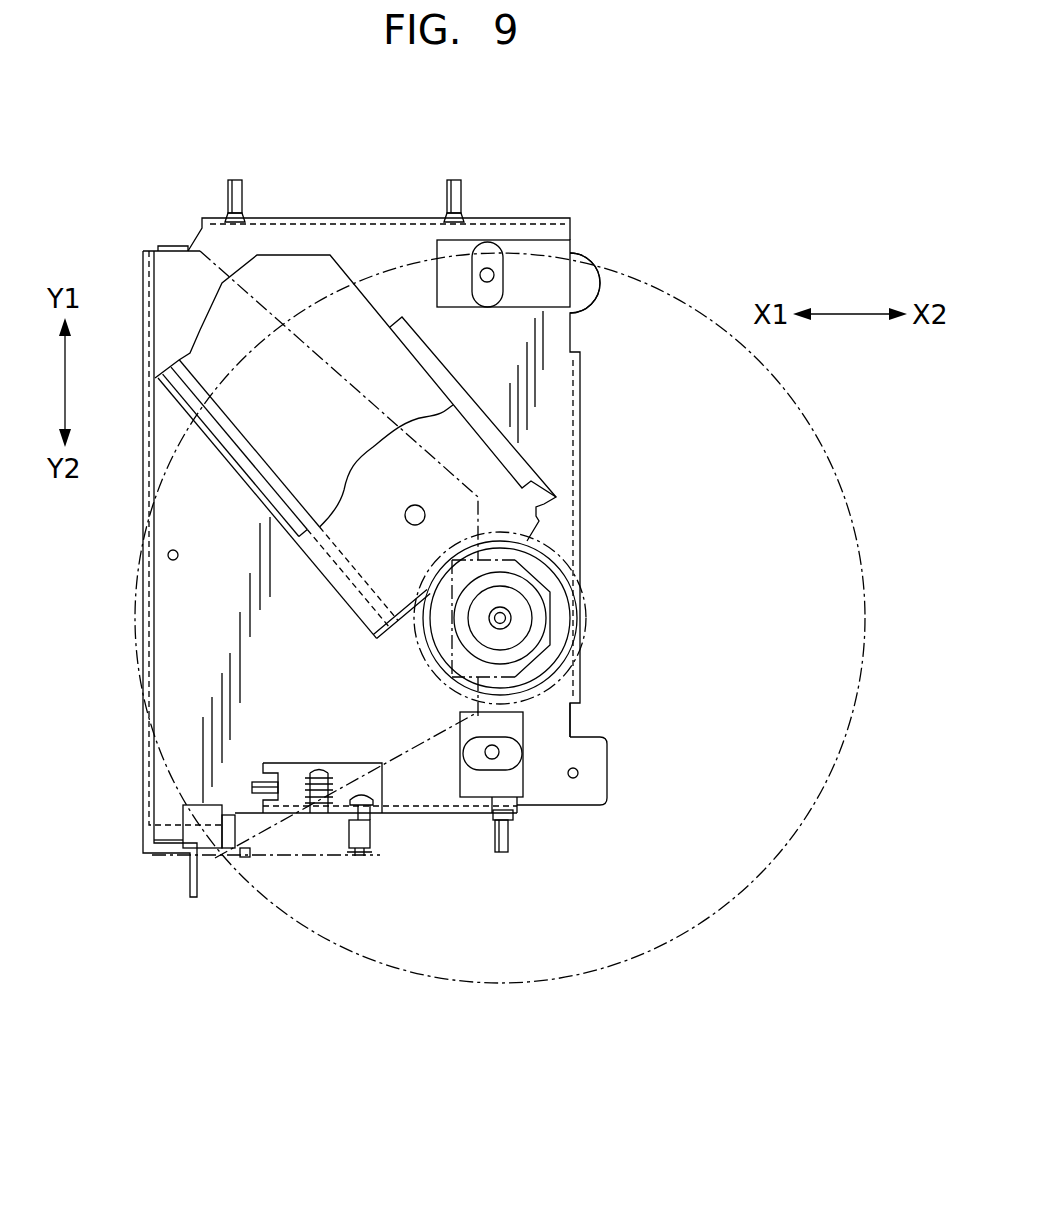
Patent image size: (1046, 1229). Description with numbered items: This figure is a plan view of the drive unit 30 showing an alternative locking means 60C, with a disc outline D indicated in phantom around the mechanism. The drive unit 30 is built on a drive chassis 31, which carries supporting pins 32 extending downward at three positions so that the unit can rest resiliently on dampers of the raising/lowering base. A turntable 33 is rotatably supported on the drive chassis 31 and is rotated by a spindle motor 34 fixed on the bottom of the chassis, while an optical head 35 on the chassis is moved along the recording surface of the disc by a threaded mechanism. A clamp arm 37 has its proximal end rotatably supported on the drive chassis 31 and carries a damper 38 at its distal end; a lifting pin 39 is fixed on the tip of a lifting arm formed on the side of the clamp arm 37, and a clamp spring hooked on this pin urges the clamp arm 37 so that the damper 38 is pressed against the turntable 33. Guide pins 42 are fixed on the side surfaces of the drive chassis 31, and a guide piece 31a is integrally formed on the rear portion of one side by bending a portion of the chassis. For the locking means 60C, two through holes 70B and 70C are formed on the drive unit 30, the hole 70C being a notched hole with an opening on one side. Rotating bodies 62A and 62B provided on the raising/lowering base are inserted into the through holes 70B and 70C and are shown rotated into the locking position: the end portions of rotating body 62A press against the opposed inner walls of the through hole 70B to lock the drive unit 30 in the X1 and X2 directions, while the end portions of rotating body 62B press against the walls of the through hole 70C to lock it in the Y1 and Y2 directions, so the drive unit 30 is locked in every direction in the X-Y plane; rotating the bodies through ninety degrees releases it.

The drive unit 30 is at (575, 194).
The drive chassis 31 is at (580, 395).
The guide piece 31a is at (218, 826).
The supporting pin 32 is at (579, 773).
The turntable 33 is at (559, 570).
The spindle motor 34 is at (585, 600).
The optical head 35 is at (371, 475).
The clamp arm 37 is at (290, 825).
The damper 38 is at (544, 660).
The lifting pin 39 is at (372, 855).
The guide pin 42 is at (243, 195).
The locking means 60C is at (543, 785).
The rotating body 62A is at (478, 758).
The rotating body 62B is at (520, 275).
The through hole 70B is at (541, 736).
The through hole 70C is at (576, 285).
The disc outline D is at (577, 988).